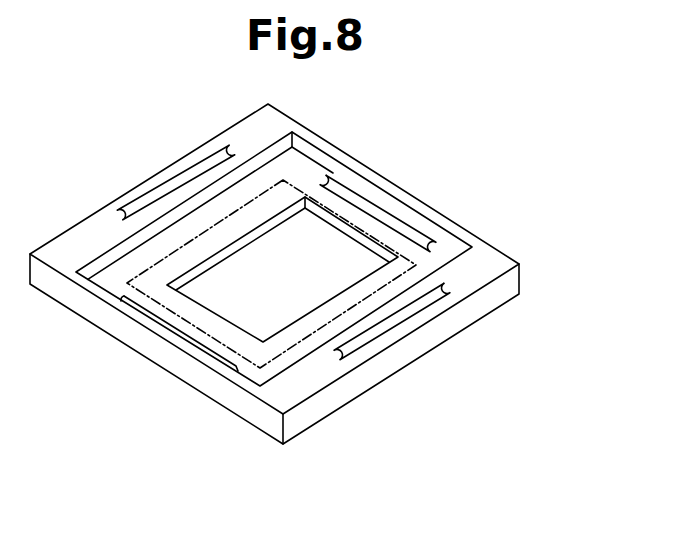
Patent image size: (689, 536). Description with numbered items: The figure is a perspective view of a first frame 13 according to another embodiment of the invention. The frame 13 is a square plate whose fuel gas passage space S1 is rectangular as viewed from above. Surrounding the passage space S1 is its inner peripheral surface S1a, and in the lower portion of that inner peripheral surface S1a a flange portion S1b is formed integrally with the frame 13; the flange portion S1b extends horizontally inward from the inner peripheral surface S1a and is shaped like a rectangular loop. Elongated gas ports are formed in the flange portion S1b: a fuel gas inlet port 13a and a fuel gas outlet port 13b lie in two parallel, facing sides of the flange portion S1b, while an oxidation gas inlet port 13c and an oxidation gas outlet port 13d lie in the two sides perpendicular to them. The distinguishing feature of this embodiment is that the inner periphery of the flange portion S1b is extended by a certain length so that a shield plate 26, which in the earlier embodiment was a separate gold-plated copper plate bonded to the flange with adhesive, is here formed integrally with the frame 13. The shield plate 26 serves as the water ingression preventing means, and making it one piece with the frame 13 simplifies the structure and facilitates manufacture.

The first frame 13 is at (502, 262).
The fuel gas inlet port 13a is at (378, 218).
The fuel gas outlet port 13b is at (203, 352).
The oxidation gas inlet port 13c is at (432, 297).
The oxidation gas outlet port 13d is at (125, 216).
The shield plate 26 is at (217, 245).
The fuel gas passage space S1 is at (282, 269).
The inner peripheral surface S1a is at (458, 241).
The flange portion S1b is at (356, 219).